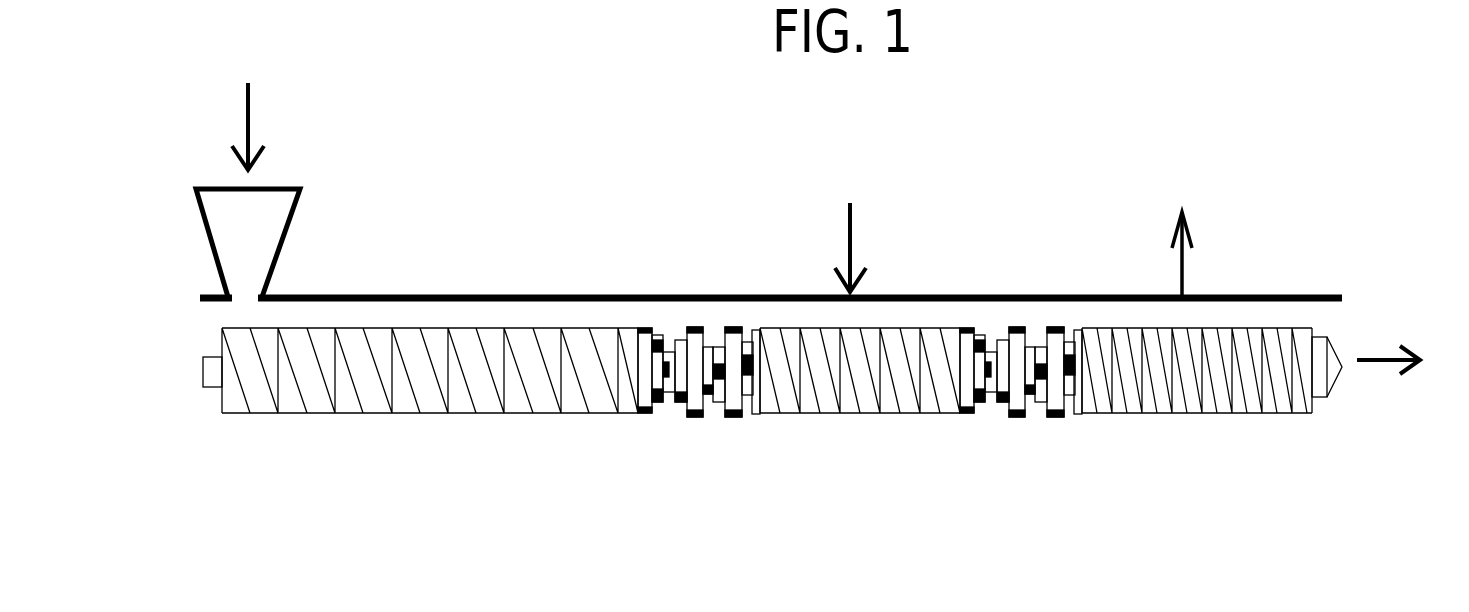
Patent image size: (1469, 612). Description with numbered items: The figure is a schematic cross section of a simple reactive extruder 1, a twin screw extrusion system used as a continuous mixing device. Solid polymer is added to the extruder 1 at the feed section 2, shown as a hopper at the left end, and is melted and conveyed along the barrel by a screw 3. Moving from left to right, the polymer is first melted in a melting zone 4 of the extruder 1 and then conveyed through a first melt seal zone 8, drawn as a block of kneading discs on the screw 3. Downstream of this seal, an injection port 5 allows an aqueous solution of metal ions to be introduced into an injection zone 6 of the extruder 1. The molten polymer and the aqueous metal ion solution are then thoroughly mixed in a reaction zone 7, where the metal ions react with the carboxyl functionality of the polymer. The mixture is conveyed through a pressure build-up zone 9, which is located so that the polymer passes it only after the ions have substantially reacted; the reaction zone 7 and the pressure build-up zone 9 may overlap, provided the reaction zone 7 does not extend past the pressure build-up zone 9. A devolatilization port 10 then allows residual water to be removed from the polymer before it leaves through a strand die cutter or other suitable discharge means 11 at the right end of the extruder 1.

The reactive extruder 1 is at (640, 270).
The feed section 2 is at (248, 109).
The screw 3 is at (207, 403).
The melting zone 4 is at (226, 442).
The injection port 5 is at (850, 229).
The injection zone 6 is at (757, 438).
The reaction zone 7 is at (852, 438).
The first melt seal zone 8 is at (660, 342).
The pressure build-up zone 9 is at (966, 270).
The devolatilization port 10 is at (1182, 237).
The discharge means 11 is at (1266, 370).